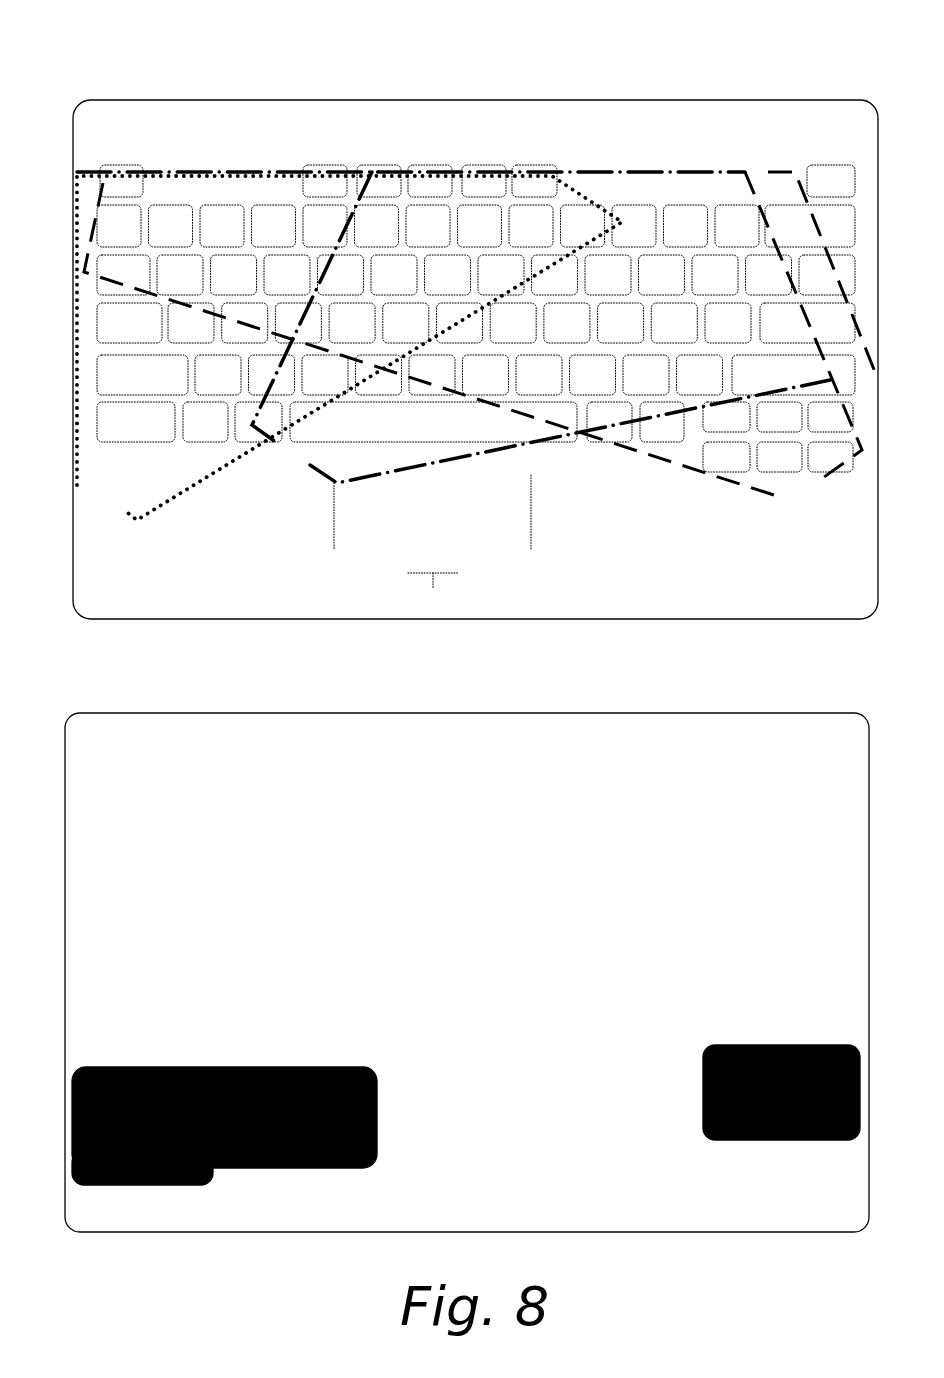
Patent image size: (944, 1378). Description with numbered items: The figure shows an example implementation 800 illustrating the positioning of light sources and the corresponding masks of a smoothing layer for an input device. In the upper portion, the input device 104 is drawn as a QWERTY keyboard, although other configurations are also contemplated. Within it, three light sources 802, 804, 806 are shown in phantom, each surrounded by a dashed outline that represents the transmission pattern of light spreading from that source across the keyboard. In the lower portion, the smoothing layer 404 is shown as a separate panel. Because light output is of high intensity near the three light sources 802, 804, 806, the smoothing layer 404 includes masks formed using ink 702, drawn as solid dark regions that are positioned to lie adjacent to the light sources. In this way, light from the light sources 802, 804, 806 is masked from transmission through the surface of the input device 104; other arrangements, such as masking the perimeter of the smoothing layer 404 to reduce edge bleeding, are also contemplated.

The example implementation 800 is at (151, 67).
The input device 104 is at (475, 359).
The light source 802 is at (348, 348).
The light source 804 is at (453, 341).
The light source 806 is at (479, 359).
The smoothing layer 404 is at (467, 972).
The ink 702 is at (224, 1067).